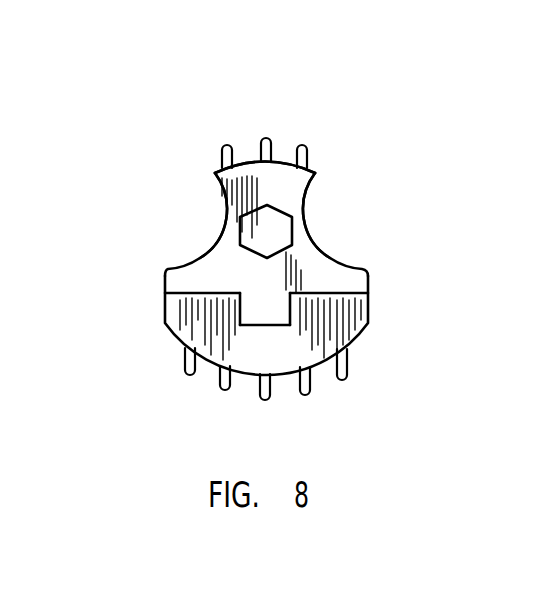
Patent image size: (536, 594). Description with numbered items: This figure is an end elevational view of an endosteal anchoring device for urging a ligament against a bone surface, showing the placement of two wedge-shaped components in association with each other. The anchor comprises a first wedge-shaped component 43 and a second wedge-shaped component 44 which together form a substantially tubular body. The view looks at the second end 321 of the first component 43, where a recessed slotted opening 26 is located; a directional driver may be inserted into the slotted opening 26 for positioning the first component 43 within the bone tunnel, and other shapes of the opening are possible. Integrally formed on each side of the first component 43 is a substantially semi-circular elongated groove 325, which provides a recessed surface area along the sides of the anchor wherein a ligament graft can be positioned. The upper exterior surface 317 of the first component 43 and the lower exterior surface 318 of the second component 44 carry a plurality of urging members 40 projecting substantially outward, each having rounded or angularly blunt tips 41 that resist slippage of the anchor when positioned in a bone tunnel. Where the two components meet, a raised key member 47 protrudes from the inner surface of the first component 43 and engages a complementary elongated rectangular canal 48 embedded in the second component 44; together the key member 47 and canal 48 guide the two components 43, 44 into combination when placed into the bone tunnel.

The first wedge-shaped component 43 is at (243, 125).
The second wedge-shaped component 44 is at (388, 354).
The urging members 40 is at (307, 157).
The blunt tips 41 is at (303, 152).
The upper exterior surface 317 is at (283, 157).
The recessed slotted opening 26 is at (257, 242).
The elongated groove 325 is at (317, 240).
The second end 321 is at (218, 273).
The raised key member 47 is at (267, 302).
The elongated rectangular canal 48 is at (260, 325).
The lower exterior surface 318 is at (323, 373).